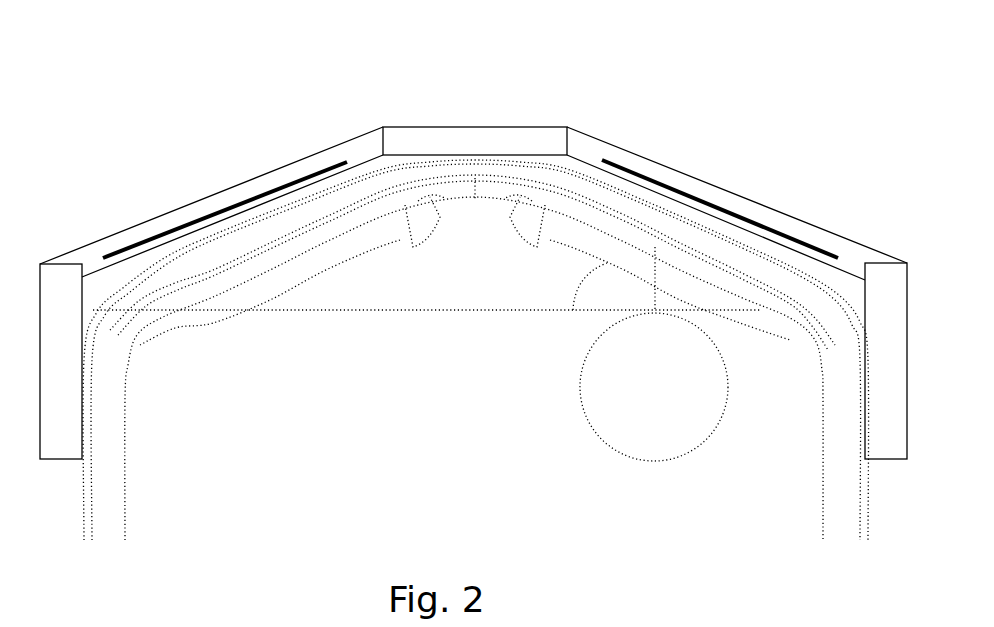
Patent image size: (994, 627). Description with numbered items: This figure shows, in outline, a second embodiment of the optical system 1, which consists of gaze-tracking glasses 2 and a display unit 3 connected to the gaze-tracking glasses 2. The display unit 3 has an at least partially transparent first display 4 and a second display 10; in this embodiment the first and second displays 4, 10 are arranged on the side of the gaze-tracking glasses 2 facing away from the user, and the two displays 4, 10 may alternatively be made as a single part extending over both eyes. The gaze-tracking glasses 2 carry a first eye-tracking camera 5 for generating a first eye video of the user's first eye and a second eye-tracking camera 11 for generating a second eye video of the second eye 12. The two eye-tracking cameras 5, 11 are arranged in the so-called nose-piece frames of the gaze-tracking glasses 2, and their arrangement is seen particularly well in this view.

The optical system 1 is at (692, 112).
The gaze-tracking glasses 2 is at (132, 330).
The display unit 3 is at (468, 137).
The first display 4 is at (218, 210).
The first eye-tracking camera 5 is at (397, 235).
The second display 10 is at (712, 207).
The second eye-tracking camera 11 is at (553, 220).
The second eye 12 is at (697, 430).